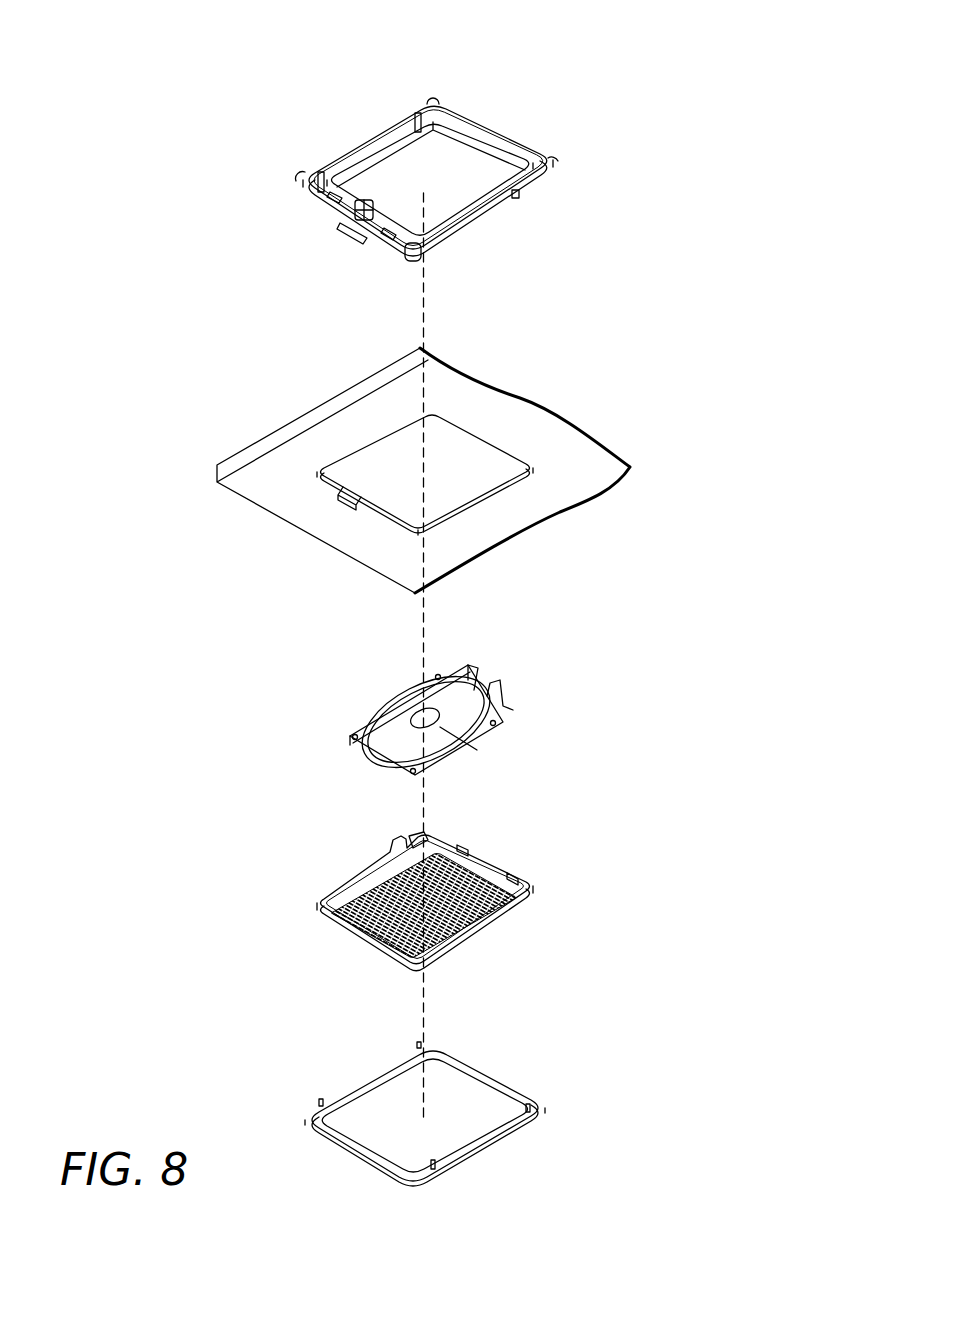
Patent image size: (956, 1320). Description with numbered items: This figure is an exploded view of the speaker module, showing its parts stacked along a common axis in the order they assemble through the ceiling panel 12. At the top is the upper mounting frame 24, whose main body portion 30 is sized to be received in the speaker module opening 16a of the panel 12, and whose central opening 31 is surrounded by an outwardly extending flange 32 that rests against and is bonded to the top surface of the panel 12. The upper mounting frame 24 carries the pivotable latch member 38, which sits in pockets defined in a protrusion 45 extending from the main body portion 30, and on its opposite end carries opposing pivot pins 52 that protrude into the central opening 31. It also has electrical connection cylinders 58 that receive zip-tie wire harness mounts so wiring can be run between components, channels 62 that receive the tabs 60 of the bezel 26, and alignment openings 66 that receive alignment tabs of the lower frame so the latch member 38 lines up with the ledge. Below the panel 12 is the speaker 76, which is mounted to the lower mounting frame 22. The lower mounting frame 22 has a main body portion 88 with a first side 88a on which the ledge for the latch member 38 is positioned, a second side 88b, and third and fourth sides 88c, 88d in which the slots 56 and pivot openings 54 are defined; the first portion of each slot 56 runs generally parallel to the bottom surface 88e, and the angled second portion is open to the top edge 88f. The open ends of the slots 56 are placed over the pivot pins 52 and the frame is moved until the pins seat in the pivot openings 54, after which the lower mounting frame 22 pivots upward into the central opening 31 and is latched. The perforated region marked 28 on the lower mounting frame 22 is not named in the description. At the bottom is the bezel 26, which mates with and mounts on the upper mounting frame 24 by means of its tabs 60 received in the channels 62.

The upper mounting frame 24 is at (572, 80).
The main body portion 30 is at (445, 156).
The central opening 31 is at (445, 142).
The flange 32 is at (547, 170).
The latch member 38 is at (367, 203).
The protrusion 45 is at (350, 233).
The pivot pins 52 is at (515, 195).
The electrical connection cylinders 58 is at (438, 93).
The channels 62 is at (417, 132).
The alignment openings 66 is at (332, 197).
The panel 12 is at (426, 470).
The speaker module opening 16a is at (473, 440).
The speaker 76 is at (465, 720).
The lower mounting frame 22 is at (438, 891).
The perforated region 28 is at (360, 920).
The pivot openings 54 is at (427, 837).
The slots 56 is at (407, 837).
The main body portion 88 is at (535, 893).
The first side 88a is at (382, 953).
The second side 88b is at (492, 865).
The third side 88c is at (342, 888).
The fourth side 88d is at (487, 935).
The bottom surface 88e is at (450, 945).
The top edge 88f is at (417, 837).
The bezel 26 is at (415, 1114).
The tabs 60 is at (320, 1105).